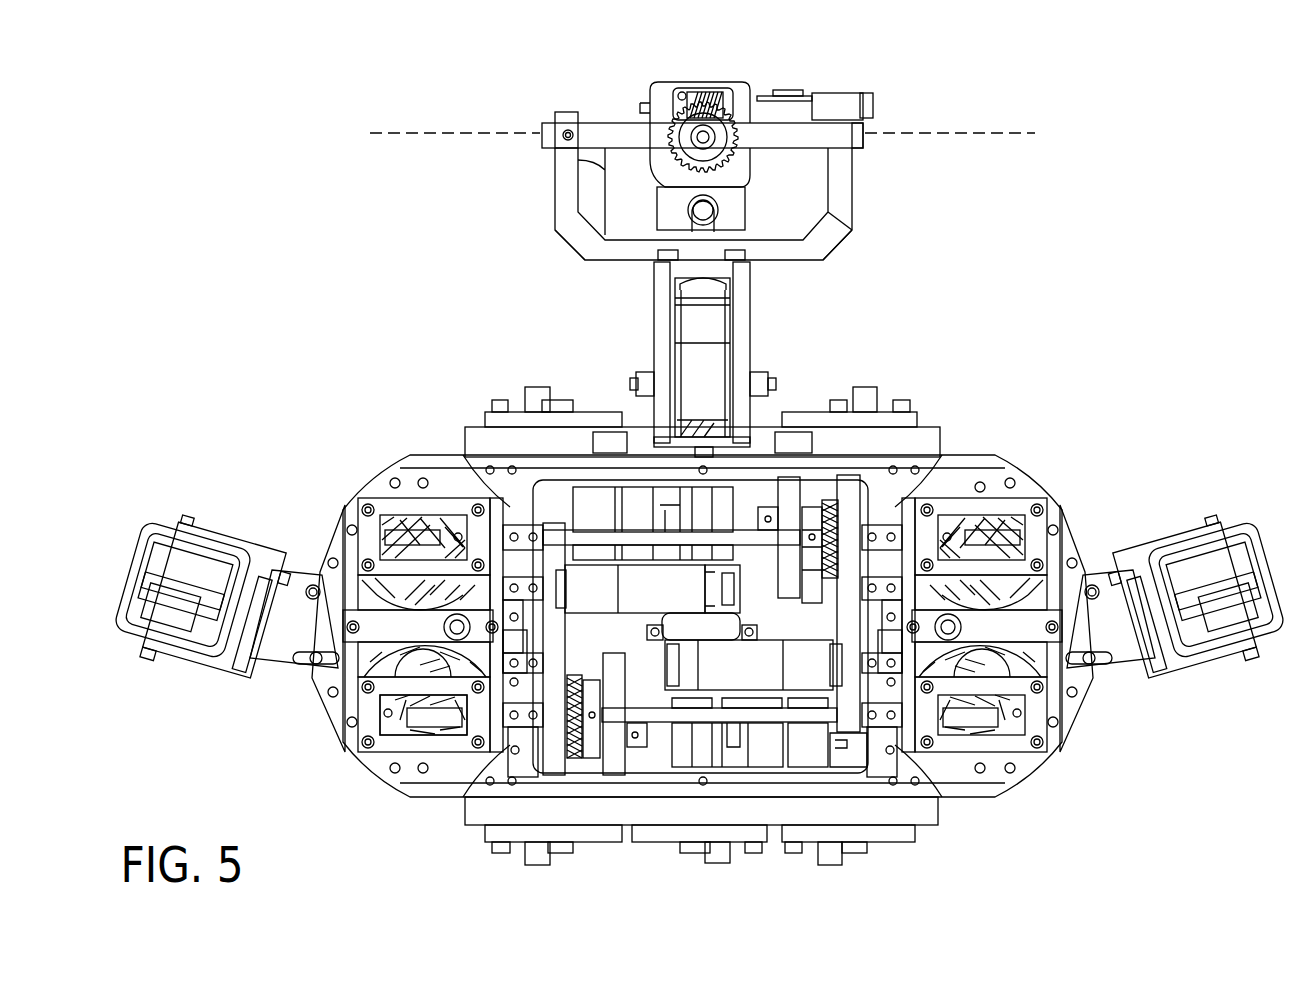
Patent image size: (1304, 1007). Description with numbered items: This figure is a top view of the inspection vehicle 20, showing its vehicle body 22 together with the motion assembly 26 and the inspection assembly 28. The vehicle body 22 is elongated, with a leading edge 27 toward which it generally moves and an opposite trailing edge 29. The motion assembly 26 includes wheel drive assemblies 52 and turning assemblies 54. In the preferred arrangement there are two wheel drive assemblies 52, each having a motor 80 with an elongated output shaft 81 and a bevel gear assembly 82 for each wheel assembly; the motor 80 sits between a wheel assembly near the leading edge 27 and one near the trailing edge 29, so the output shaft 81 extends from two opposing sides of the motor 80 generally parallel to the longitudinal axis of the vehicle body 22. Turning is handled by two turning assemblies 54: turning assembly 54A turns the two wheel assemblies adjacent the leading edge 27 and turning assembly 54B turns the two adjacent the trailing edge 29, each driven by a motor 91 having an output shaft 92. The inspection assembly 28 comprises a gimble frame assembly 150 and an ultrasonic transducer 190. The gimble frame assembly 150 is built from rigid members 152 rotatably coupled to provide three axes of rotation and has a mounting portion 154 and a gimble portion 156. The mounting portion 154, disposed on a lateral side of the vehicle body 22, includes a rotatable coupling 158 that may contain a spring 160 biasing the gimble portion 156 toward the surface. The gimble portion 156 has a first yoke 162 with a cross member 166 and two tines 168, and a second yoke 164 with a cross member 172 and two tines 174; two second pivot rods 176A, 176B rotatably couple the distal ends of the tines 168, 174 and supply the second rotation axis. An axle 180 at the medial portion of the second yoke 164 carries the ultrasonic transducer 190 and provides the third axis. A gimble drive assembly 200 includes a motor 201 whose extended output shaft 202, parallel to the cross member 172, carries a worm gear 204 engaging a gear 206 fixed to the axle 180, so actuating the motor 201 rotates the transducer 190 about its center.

The inspection vehicle 20 is at (358, 232).
The vehicle body 22 is at (975, 468).
The motion assembly 26 is at (652, 850).
The leading edge 27 is at (320, 700).
The inspection assembly 28 is at (955, 215).
The trailing edge 29 is at (1085, 700).
The wheel drive assembly 52 is at (590, 500).
The turning assembly 54 is at (667, 660).
The turning assembly 54A is at (638, 620).
The turning assembly 54B is at (745, 655).
The motor 80 is at (595, 497).
The output shaft 81 is at (395, 520).
The bevel gear assembly 82 is at (403, 748).
The motor 91 is at (697, 590).
The output shaft 92 is at (370, 590).
The gimble frame assembly 150 is at (748, 340).
The rigid member 152 is at (655, 300).
The mounting portion 154 is at (750, 435).
The gimble portion 156 is at (525, 258).
The rotatable coupling 158 is at (628, 395).
The spring 160 is at (690, 430).
The first yoke 162 is at (838, 235).
The second yoke 164 is at (845, 160).
The cross member 166 is at (778, 258).
The tine 168 is at (560, 200).
The cross member 172 is at (630, 120).
The tine 174 is at (552, 125).
The second pivot rod 176A is at (548, 150).
The second pivot rod 176B is at (872, 118).
The axle 180 is at (728, 128).
The ultrasonic transducer 190 is at (600, 95).
The gimble drive assembly 200 is at (828, 84).
The motor 201 is at (855, 100).
The output shaft 202 is at (720, 90).
The worm gear 204 is at (690, 93).
The gear 206 is at (740, 150).